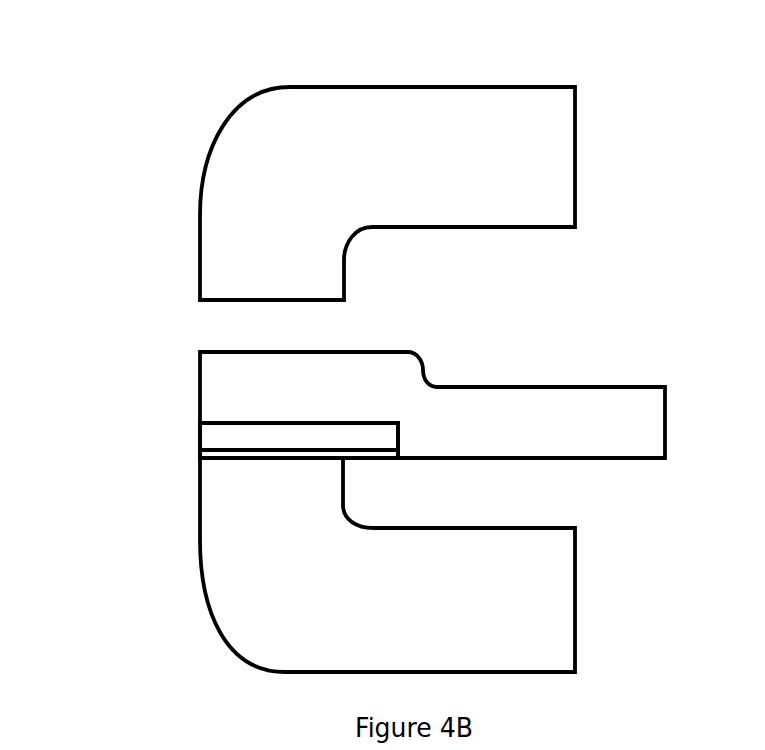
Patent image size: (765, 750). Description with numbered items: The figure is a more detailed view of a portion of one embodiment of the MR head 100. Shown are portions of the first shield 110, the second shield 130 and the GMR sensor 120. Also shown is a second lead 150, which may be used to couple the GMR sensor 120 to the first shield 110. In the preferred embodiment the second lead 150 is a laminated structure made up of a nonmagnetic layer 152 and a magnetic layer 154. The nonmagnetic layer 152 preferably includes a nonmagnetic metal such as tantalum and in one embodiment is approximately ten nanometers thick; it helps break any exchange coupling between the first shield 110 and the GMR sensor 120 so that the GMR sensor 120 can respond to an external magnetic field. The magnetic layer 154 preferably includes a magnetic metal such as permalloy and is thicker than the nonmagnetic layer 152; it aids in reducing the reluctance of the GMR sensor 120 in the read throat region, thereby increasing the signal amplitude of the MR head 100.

The MR head 100 is at (440, 49).
The first shield 110 is at (575, 582).
The GMR sensor 120 is at (592, 387).
The second shield 130 is at (575, 175).
The second lead 150 is at (130, 458).
The nonmagnetic layer 152 is at (200, 432).
The magnetic layer 154 is at (200, 456).